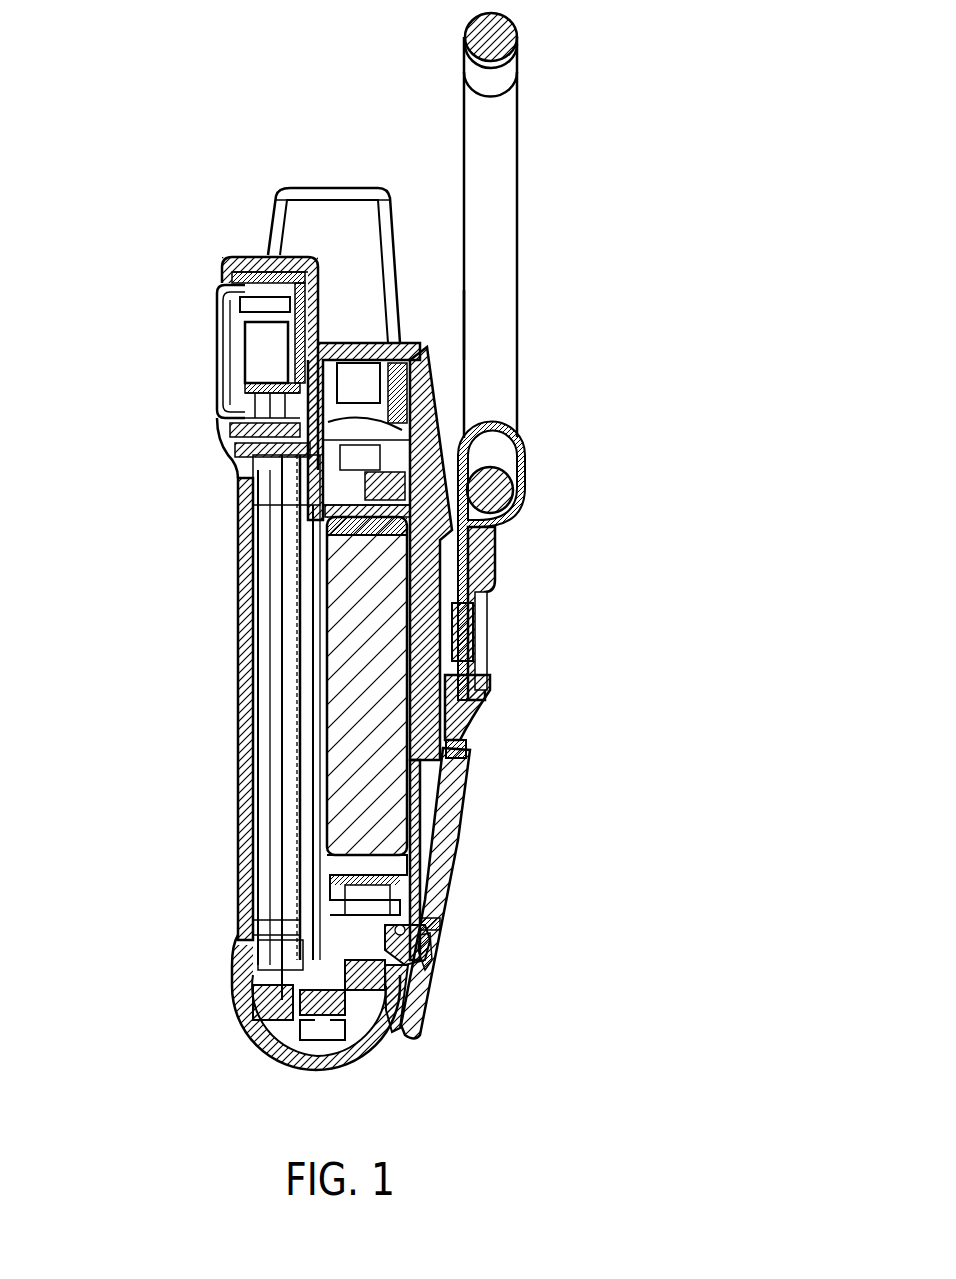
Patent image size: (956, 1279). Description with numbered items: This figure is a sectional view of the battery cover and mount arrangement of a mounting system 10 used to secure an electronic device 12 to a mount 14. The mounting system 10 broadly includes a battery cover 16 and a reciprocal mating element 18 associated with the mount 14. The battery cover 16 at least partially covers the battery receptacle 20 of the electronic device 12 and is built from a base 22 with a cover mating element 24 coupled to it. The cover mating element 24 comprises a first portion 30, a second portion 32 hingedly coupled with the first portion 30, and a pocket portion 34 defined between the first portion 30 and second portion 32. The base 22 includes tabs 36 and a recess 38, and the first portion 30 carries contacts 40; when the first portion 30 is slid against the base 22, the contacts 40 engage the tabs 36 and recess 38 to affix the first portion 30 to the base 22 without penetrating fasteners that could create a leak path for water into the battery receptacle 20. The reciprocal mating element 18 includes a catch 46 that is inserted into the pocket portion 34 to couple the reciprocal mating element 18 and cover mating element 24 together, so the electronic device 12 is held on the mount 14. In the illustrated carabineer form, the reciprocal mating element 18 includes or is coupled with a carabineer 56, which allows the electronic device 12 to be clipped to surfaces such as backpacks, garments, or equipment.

The mounting system 10 is at (217, 125).
The electronic device 12 is at (298, 640).
The mount 14 is at (495, 197).
The battery cover 16 is at (430, 480).
The reciprocal mating element 18 is at (467, 757).
The battery receptacle 20 is at (360, 718).
The base 22 is at (492, 552).
The cover mating element 24 is at (490, 643).
The first portion 30 is at (427, 827).
The second portion 32 is at (437, 978).
The pocket portion 34 is at (422, 927).
The tab 36 is at (412, 665).
The recess 38 is at (250, 918).
The contact 40 is at (483, 700).
The catch 46 is at (430, 933).
The carabineer 56 is at (482, 313).